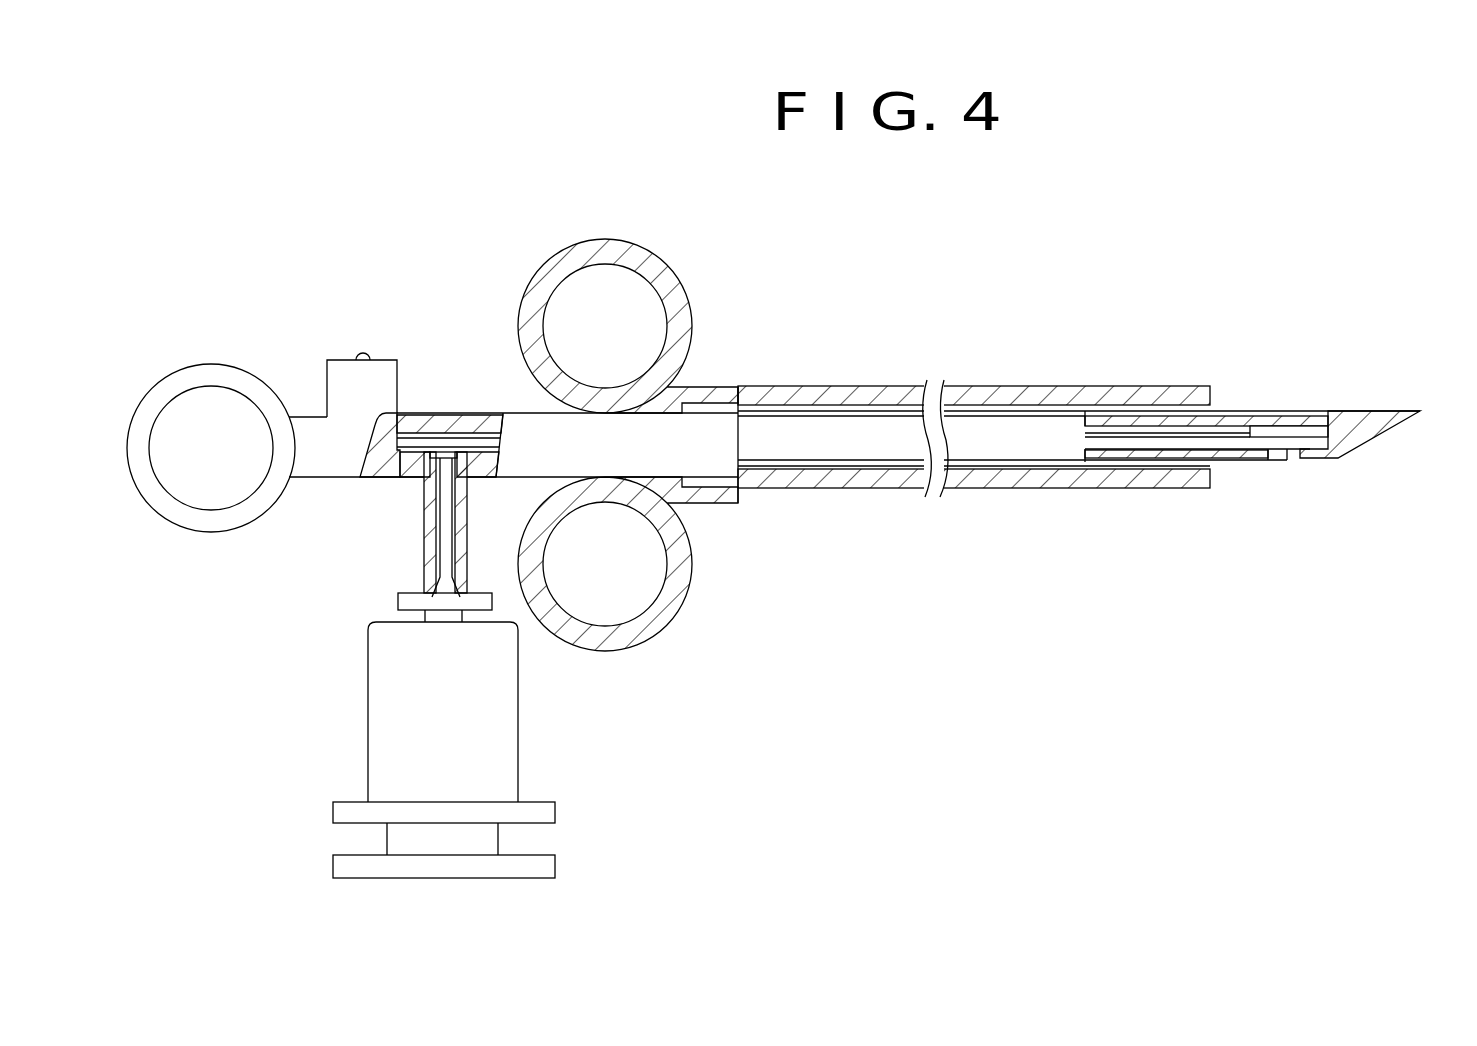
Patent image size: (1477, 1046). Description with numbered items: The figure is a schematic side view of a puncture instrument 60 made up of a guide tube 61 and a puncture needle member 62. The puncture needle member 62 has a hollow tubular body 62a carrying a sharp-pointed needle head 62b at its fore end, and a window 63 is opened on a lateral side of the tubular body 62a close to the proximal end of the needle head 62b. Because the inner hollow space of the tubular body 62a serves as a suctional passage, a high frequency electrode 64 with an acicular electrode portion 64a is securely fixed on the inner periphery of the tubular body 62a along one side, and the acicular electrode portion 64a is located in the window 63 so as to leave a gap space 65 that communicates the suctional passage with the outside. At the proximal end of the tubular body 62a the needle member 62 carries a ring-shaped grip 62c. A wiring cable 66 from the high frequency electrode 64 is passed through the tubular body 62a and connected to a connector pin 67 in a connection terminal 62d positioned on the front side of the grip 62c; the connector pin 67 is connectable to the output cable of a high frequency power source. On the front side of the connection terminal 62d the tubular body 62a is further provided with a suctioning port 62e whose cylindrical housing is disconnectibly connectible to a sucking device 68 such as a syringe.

The puncture instrument 60 is at (790, 555).
The guide tube 61 is at (1057, 480).
The puncture needle member 62 is at (790, 444).
The hollow tubular body 62a is at (1013, 430).
The sharp-pointed needle head 62b is at (1393, 425).
The grip 62c is at (209, 535).
The connection terminal 62d is at (398, 372).
The suctioning port 62e is at (420, 527).
The window 63 is at (1285, 460).
The high frequency electrode 64 is at (1317, 427).
The acicular electrode portion 64a is at (1290, 457).
The gap space 65 is at (1267, 420).
The wiring cable 66 is at (1135, 437).
The connector pin 67 is at (363, 352).
The sucking device 68 is at (510, 730).